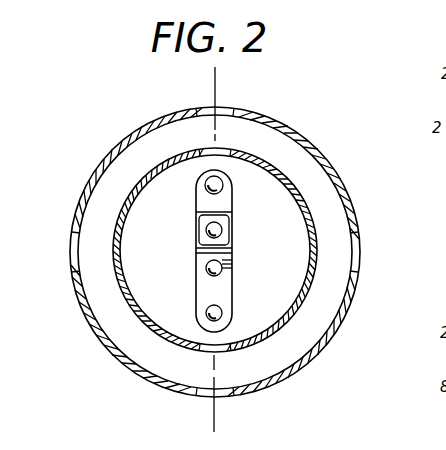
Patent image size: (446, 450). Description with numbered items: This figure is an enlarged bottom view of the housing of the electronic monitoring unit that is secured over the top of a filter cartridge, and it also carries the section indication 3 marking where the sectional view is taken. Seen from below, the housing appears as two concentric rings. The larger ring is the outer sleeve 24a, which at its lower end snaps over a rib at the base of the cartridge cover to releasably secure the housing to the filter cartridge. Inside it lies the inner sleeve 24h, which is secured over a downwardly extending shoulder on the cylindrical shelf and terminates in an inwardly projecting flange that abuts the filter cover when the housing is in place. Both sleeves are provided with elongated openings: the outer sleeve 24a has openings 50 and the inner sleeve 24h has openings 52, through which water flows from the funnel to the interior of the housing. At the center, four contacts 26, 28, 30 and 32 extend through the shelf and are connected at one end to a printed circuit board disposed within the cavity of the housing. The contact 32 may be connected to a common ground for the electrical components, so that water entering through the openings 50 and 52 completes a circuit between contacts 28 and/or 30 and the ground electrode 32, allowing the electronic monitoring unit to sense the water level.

The section line 3- 3 is at (212, 80).
The outer sleeve 24a is at (340, 185).
The inner sleeve 24h is at (313, 227).
The contact 26 is at (219, 310).
The contact 28 is at (223, 266).
The contact 30 is at (219, 229).
The contact 32 is at (223, 189).
The elongated openings 50 is at (226, 108).
The elongated openings 52 is at (219, 145).